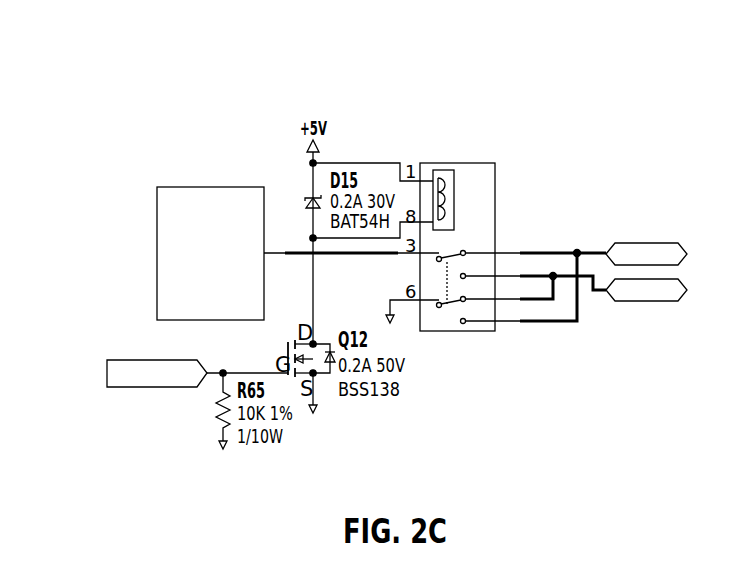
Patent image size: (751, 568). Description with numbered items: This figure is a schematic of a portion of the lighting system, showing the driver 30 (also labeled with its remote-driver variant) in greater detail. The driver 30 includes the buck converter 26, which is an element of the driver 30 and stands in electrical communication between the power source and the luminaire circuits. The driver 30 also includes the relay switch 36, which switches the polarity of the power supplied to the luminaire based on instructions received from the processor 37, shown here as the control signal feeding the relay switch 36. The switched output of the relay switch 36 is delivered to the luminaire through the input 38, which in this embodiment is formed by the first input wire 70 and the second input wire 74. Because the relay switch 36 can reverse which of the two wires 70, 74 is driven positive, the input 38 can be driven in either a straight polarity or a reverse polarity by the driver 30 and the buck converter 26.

The buck converter 26 is at (225, 267).
The relay switch 36 is at (449, 84).
The input 38 is at (598, 194).
The driver 30 is at (675, 53).
The first input wire 70 is at (649, 243).
The second input wire 74 is at (647, 301).
The processor 37 is at (105, 364).